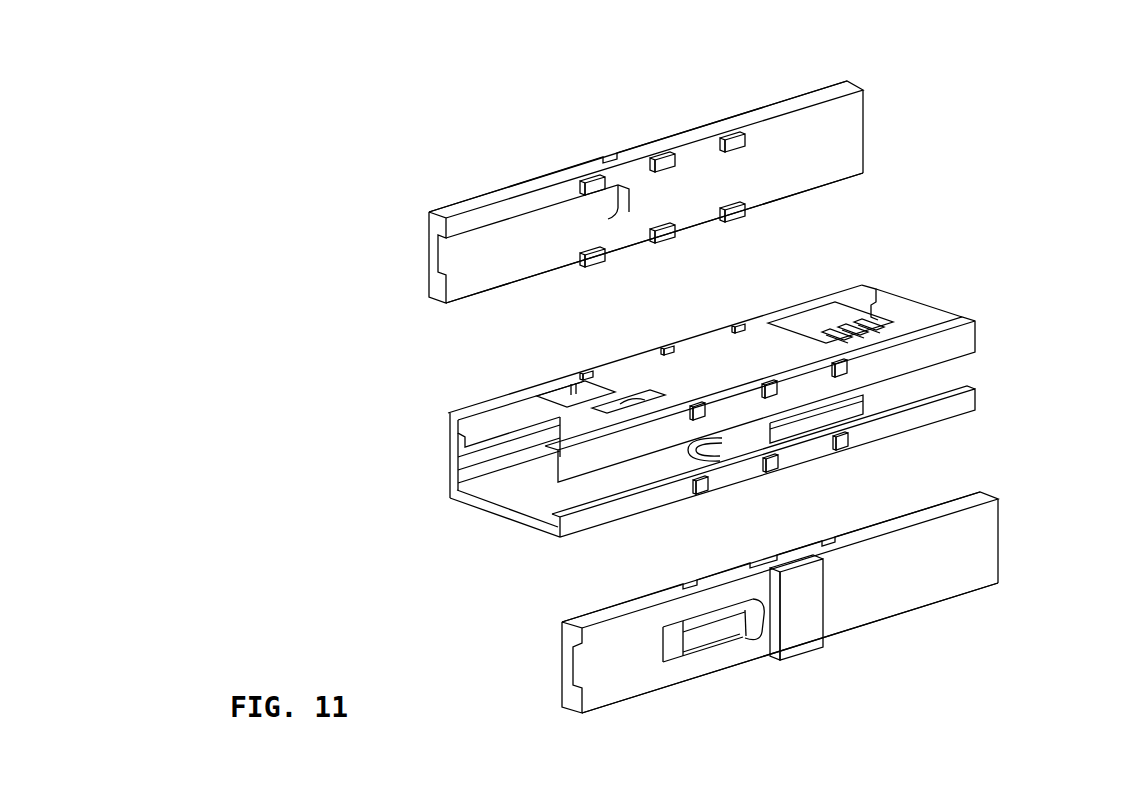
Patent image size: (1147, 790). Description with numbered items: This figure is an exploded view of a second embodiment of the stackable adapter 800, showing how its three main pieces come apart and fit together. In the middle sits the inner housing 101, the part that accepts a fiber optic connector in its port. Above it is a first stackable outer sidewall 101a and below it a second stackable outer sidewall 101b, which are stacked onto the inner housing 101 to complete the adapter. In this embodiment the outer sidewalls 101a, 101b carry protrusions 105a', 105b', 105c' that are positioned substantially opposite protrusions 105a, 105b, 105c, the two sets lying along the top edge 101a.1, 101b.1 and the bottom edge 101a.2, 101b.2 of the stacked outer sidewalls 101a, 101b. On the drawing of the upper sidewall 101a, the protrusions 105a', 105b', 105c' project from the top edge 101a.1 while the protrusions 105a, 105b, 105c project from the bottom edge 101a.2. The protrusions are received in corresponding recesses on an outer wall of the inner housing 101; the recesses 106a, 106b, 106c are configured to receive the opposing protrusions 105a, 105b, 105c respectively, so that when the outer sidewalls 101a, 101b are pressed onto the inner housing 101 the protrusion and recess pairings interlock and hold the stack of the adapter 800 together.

The stackable adapter 800 is at (219, 71).
The inner housing 101 is at (711, 411).
The stackable outer sidewall 101a is at (646, 192).
The top edge 101a.1 is at (843, 103).
The bottom edge 101a.2 is at (837, 182).
The stackable outer sidewall 101b is at (780, 602).
The top edge 101b.1 is at (945, 500).
The bottom edge 101b.2 is at (948, 607).
The protrusion 105a is at (792, 235).
The protrusion 105b is at (680, 269).
The protrusion 105c is at (551, 306).
The protrusion 105a' is at (632, 319).
The protrusion 105b' is at (621, 121).
The protrusion 105c' is at (701, 360).
The recess 106a is at (702, 490).
The recess 106b is at (772, 462).
The recess 106c is at (847, 447).